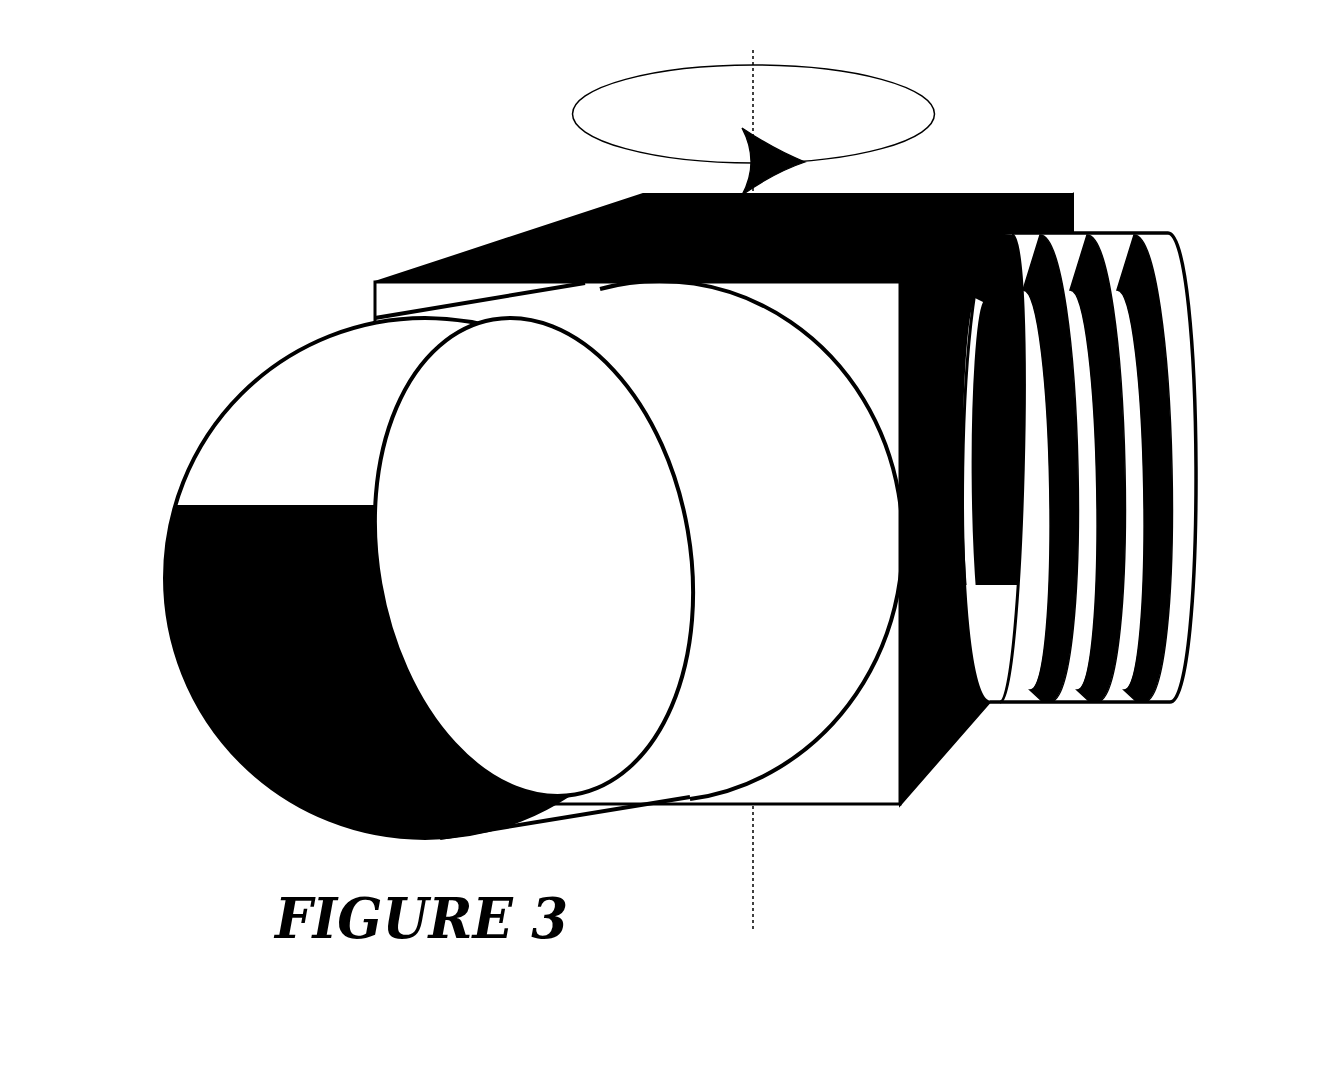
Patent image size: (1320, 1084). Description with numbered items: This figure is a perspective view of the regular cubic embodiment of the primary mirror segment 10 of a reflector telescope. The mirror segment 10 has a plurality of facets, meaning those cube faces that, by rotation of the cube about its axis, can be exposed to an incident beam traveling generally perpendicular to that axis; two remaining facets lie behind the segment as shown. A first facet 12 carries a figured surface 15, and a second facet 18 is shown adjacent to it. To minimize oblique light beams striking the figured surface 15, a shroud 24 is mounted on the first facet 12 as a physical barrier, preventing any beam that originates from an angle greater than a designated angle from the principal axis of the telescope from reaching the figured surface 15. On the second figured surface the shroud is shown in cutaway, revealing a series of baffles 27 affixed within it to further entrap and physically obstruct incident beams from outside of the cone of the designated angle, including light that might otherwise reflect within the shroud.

The mirror segment 10 is at (720, 490).
The first facet 12 is at (724, 499).
The figured surface 15 is at (447, 565).
The second facet 18 is at (955, 745).
The shroud 24 is at (751, 540).
The baffles 27 is at (1045, 692).